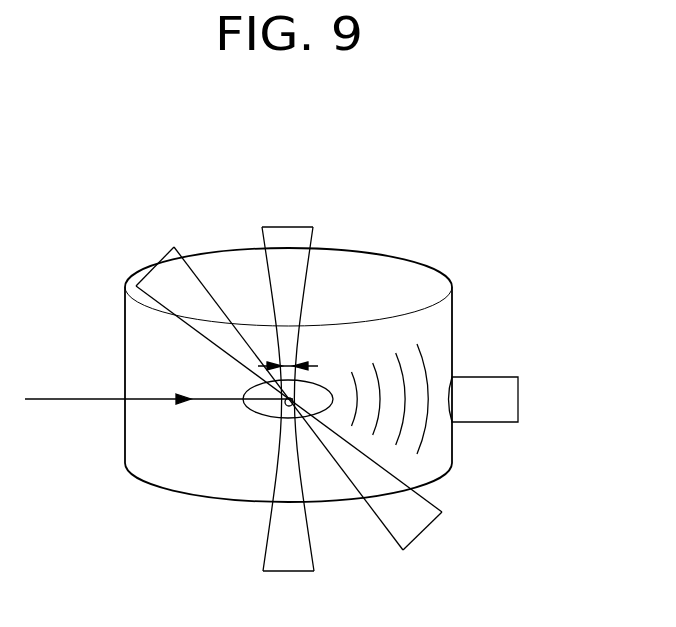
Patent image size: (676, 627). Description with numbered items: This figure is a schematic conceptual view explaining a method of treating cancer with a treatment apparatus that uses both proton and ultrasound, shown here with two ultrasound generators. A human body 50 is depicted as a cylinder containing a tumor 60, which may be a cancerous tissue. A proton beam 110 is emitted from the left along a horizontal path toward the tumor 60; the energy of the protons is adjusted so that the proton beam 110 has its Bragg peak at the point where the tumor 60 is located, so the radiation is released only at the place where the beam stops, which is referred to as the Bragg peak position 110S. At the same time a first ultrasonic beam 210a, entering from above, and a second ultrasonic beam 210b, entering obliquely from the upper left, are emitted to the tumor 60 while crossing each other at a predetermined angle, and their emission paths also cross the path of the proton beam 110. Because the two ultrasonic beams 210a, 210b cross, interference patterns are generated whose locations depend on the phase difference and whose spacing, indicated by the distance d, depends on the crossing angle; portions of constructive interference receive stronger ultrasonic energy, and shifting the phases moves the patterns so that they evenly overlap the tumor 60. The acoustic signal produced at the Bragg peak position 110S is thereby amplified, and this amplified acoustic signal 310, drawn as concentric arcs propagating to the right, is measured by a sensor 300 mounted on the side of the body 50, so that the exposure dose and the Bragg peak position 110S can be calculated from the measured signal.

The human body 50 is at (390, 255).
The first ultrasonic beam 210a is at (288, 227).
The second ultrasonic beam 210b is at (153, 262).
The proton beam 110 is at (65, 399).
The tumor 60 is at (248, 409).
The Bragg peak position 110S is at (287, 410).
The focal distance d is at (290, 363).
The amplified acoustic signal 310 is at (423, 358).
The sensor 300 is at (507, 398).